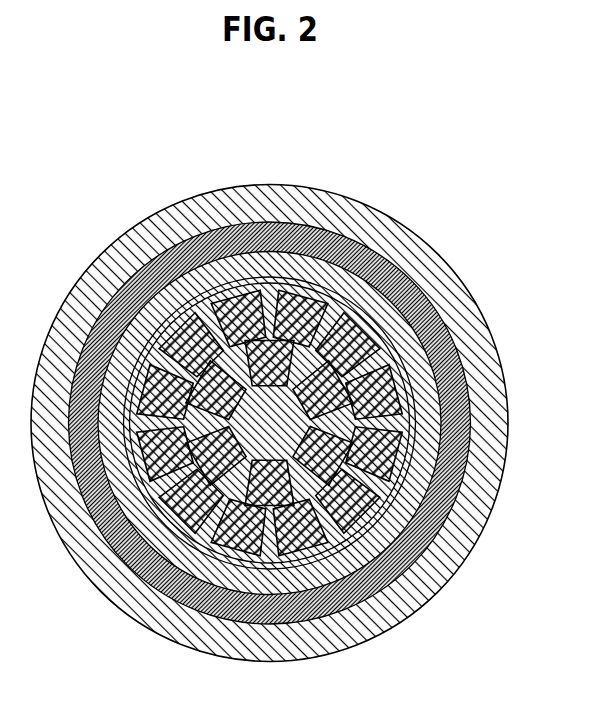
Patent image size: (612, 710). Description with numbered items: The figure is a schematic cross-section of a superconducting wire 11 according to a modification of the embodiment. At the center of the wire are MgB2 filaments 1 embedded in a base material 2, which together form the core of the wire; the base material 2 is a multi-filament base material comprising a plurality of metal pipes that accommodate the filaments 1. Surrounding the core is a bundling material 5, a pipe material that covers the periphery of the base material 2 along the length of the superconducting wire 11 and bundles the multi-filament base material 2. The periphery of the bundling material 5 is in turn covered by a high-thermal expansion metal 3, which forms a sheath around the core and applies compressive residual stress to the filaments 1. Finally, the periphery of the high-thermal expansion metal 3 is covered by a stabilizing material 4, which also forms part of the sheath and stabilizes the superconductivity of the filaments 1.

The MgB2 filament 1 is at (400, 390).
The base material 2 is at (407, 425).
The high-thermal expansion metal 3 is at (443, 483).
The stabilizing material 4 is at (445, 548).
The bundling material 5 is at (427, 452).
The superconducting wire 11 is at (198, 183).